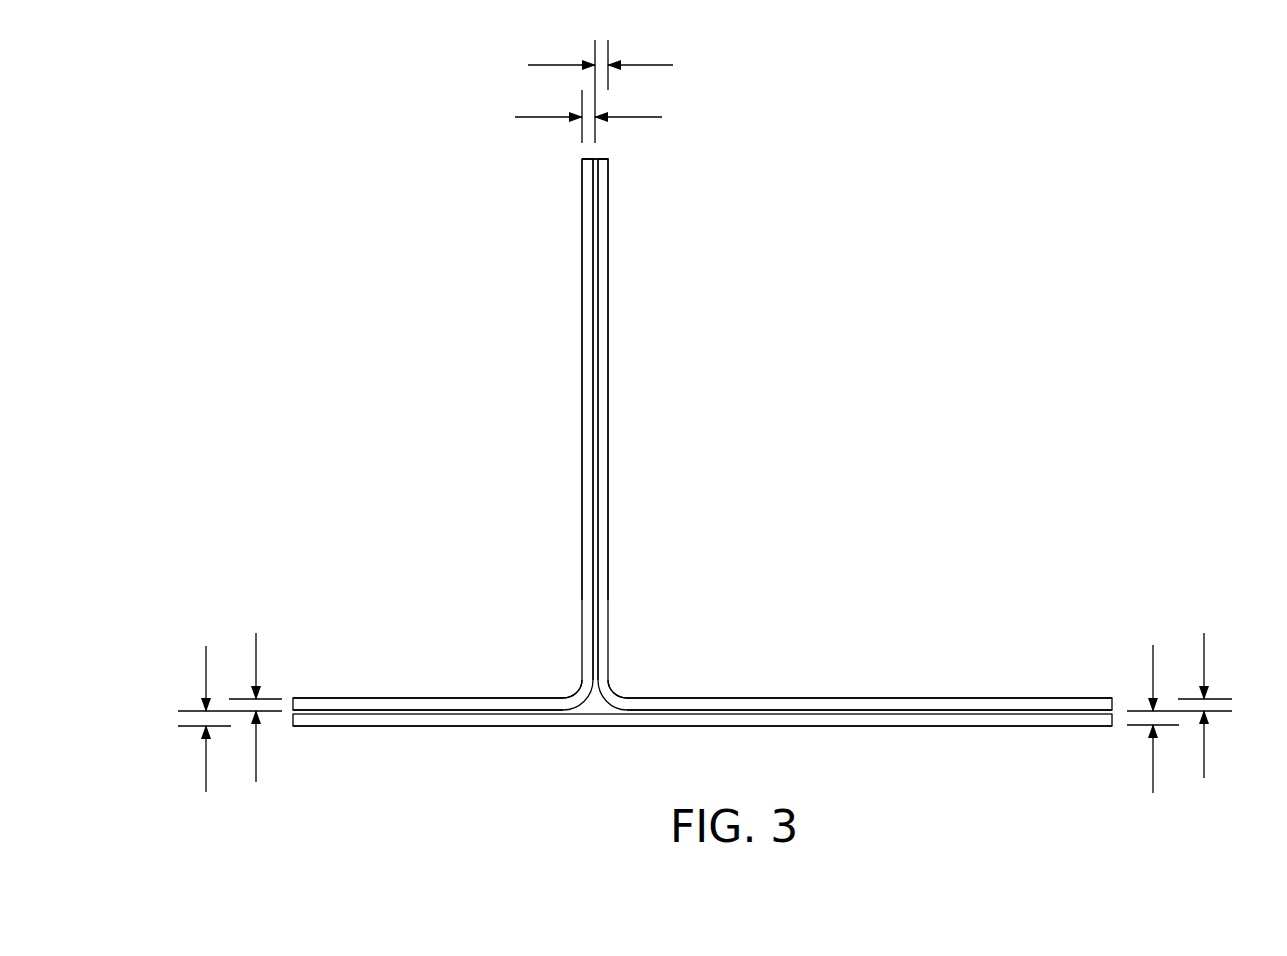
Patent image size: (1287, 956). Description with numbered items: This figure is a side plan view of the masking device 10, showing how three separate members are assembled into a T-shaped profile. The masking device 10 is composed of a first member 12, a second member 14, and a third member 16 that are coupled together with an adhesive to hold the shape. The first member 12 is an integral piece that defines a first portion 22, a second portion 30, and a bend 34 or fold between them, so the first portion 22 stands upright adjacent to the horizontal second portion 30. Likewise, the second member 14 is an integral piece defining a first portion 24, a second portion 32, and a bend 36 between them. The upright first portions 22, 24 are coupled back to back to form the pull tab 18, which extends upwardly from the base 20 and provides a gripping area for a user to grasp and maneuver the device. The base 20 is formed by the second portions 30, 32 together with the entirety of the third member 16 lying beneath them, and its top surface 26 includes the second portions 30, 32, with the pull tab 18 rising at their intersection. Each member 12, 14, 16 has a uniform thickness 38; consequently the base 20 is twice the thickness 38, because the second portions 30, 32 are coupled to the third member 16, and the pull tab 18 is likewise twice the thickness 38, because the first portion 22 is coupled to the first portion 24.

The masking device 10 is at (1023, 185).
The first member 12 is at (765, 460).
The second member 14 is at (435, 460).
The third member 16 is at (917, 748).
The pull tab 18 is at (608, 235).
The base 20 is at (1025, 727).
The first portion of the first member 22 is at (608, 334).
The first portion of the second member 24 is at (582, 334).
The top surface 26 is at (459, 698).
The second portion of the first member 30 is at (835, 698).
The second portion of the second member 32 is at (377, 698).
The bend 34 is at (616, 688).
The bend 36 is at (575, 688).
The thickness 38 is at (522, 117).